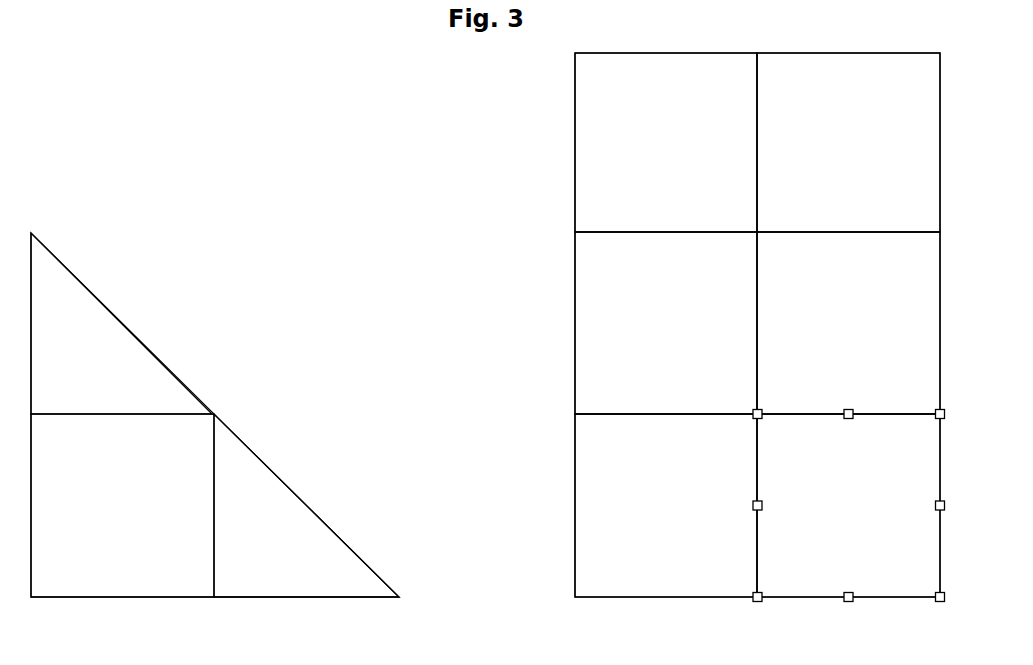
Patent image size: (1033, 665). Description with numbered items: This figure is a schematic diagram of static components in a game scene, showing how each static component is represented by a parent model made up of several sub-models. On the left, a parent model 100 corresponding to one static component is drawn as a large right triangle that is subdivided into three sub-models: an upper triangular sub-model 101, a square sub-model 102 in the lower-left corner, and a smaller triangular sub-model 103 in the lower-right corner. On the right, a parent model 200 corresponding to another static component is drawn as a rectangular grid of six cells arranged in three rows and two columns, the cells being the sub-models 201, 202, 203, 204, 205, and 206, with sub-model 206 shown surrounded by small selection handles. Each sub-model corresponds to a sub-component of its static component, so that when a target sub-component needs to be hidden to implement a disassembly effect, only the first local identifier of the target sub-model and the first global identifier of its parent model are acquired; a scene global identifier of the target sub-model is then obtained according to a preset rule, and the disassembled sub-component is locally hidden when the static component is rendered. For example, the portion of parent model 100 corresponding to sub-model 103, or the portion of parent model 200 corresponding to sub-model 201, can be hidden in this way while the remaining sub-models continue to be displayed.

The parent model 100 is at (215, 415).
The sub-model 101 is at (121, 323).
The sub-model 102 is at (122, 505).
The sub-model 103 is at (306, 505).
The parent model 200 is at (686, 327).
The sub-model 201 is at (666, 142).
The sub-model 202 is at (848, 142).
The sub-model 203 is at (666, 323).
The sub-model 204 is at (848, 323).
The sub-model 205 is at (666, 505).
The sub-model 206 is at (849, 506).